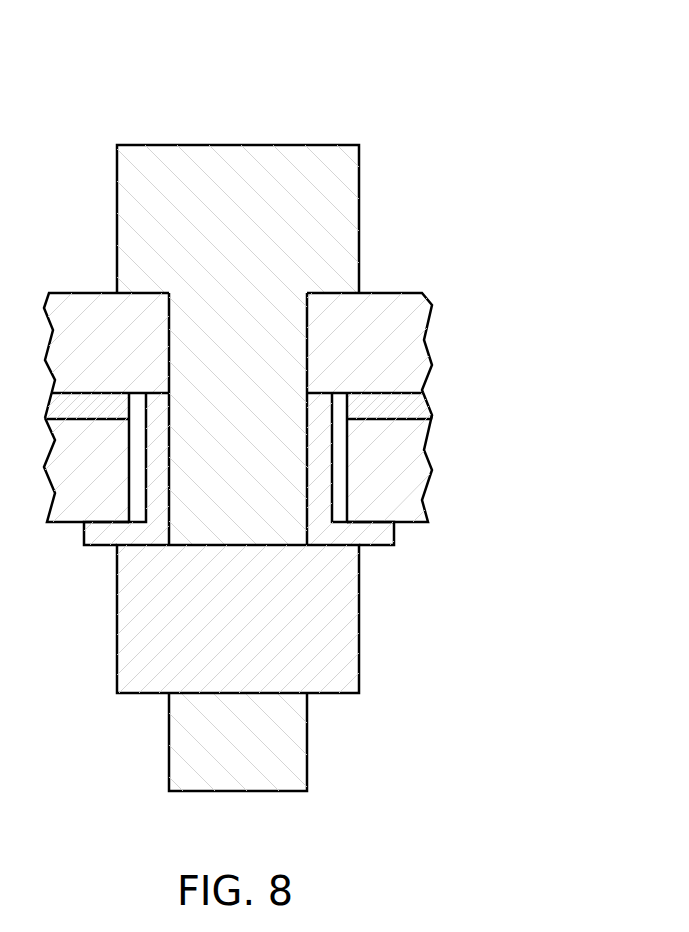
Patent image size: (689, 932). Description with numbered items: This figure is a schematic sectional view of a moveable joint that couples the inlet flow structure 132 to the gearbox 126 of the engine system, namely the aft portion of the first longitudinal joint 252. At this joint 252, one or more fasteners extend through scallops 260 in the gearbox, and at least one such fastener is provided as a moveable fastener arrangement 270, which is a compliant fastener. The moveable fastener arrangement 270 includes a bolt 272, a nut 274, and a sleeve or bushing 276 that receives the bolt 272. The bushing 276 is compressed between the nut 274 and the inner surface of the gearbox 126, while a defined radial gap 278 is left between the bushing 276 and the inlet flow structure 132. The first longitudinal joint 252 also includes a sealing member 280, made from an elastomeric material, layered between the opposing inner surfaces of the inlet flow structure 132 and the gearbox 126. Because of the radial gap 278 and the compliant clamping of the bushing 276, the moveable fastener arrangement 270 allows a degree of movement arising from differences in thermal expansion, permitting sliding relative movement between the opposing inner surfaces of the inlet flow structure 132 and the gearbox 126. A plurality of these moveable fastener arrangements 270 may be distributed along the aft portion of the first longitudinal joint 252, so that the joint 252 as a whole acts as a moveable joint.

The moveable fastener arrangement 270 is at (294, 402).
The bolt 272 is at (172, 162).
The scallops 260 is at (369, 306).
The gearbox 126 is at (282, 306).
The first longitudinal joint 252 is at (298, 372).
The sealing member 280 is at (432, 410).
The inlet flow structure 132 is at (288, 468).
The radial gap 278 is at (340, 492).
The sleeve or bushing 276 is at (375, 542).
The nut 274 is at (351, 637).